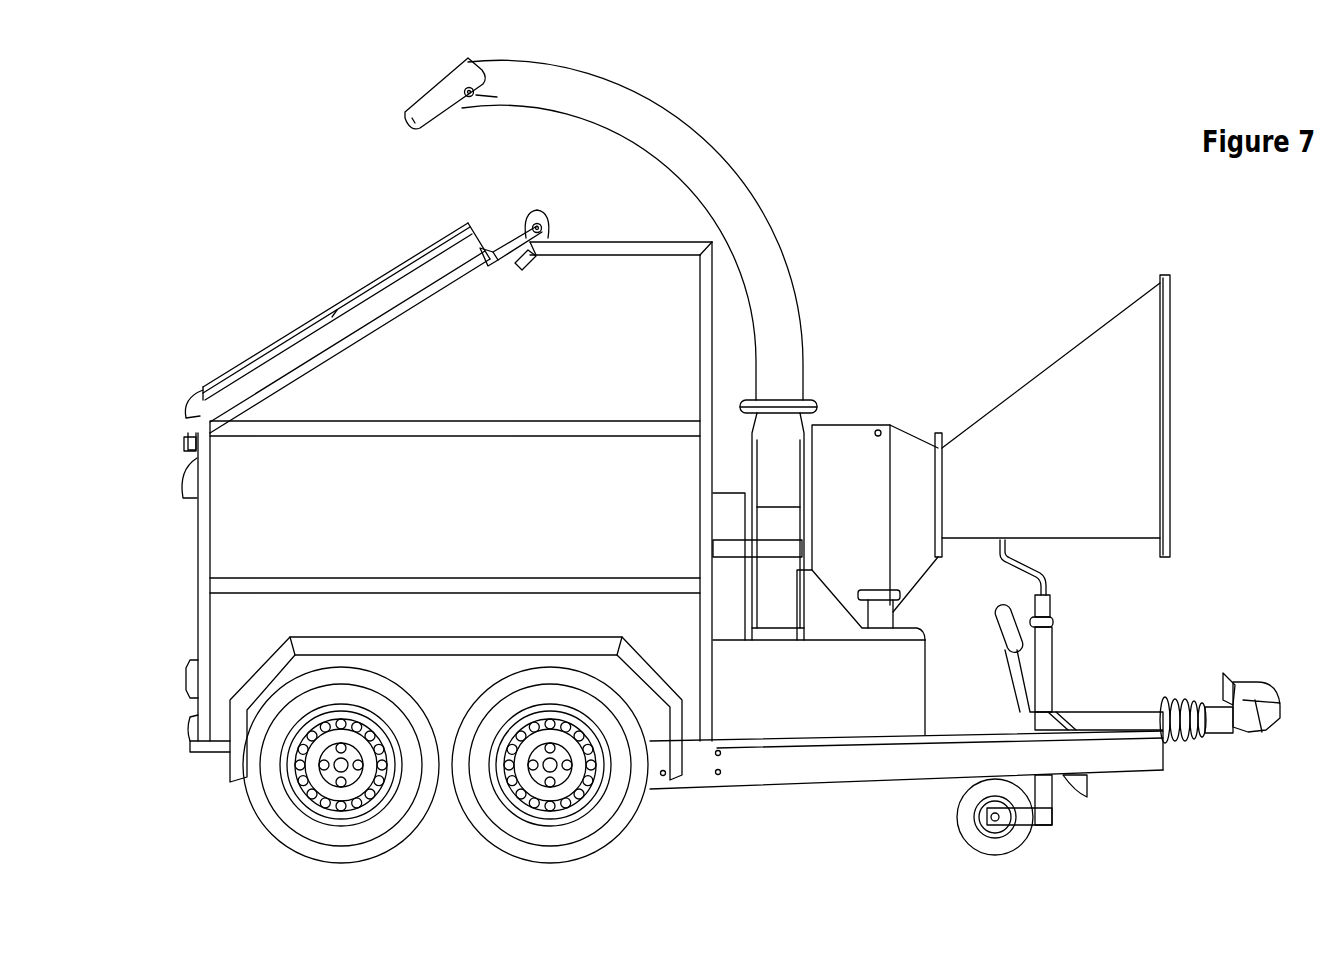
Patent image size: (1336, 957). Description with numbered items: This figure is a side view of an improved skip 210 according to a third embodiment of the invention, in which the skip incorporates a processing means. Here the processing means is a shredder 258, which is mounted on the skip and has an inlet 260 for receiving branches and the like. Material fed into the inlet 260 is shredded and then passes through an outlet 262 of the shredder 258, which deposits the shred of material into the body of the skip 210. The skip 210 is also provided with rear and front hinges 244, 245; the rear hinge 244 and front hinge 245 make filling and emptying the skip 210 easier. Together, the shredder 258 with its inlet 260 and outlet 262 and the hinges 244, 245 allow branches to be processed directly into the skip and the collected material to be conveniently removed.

The skip 210 is at (262, 271).
The rear hinge 244 is at (540, 225).
The front hinge 245 is at (188, 407).
The shredder 258 is at (799, 327).
The inlet 260 is at (1170, 426).
The outlet 262 is at (413, 118).